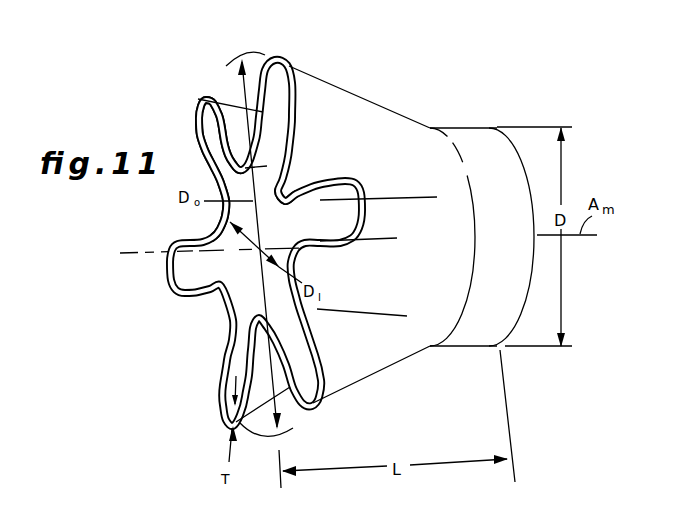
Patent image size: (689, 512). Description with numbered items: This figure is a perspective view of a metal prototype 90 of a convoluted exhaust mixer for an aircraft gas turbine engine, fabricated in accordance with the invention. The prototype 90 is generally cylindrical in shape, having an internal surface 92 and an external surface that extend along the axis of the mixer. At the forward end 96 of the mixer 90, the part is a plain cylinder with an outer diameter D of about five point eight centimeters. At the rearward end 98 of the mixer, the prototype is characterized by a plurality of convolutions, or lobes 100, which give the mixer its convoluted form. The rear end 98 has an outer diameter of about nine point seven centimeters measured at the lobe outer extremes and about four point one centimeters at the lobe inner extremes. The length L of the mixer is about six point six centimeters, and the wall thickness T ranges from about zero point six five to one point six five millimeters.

The prototype 90 is at (373, 114).
The internal surface 92 is at (277, 190).
The forward end 96 is at (465, 127).
The rearward end 98 is at (208, 124).
The lobes 100 is at (199, 98).